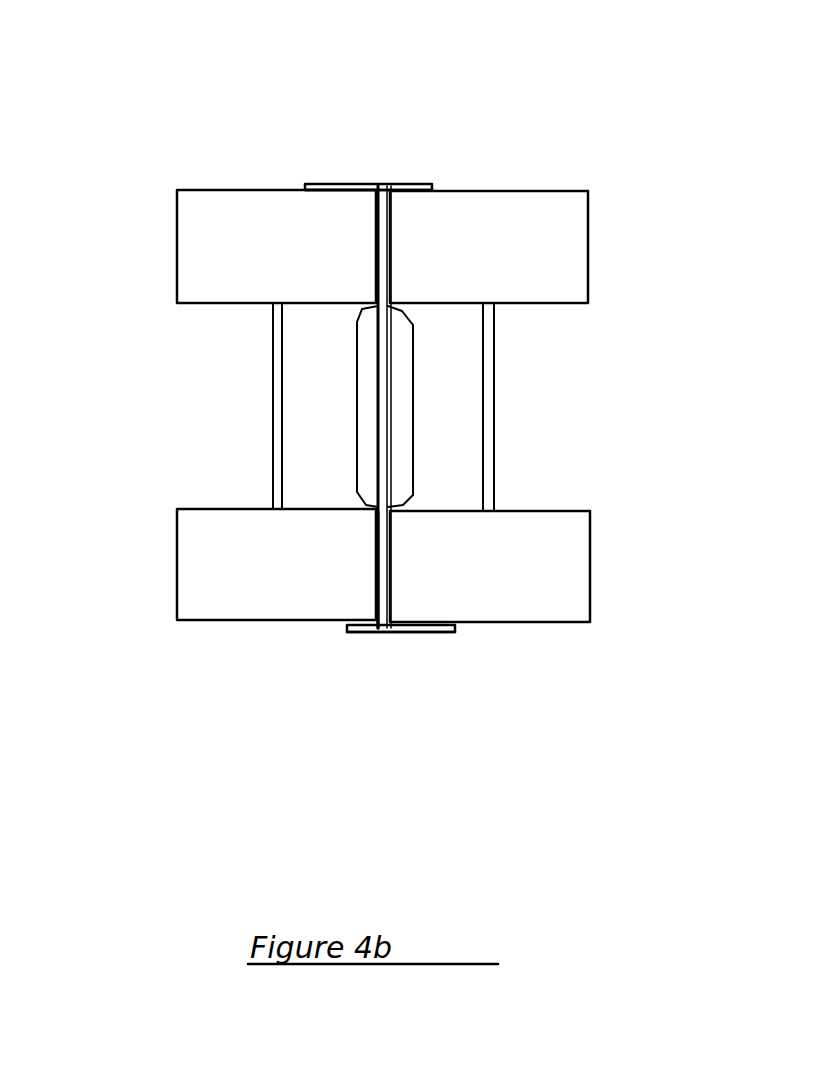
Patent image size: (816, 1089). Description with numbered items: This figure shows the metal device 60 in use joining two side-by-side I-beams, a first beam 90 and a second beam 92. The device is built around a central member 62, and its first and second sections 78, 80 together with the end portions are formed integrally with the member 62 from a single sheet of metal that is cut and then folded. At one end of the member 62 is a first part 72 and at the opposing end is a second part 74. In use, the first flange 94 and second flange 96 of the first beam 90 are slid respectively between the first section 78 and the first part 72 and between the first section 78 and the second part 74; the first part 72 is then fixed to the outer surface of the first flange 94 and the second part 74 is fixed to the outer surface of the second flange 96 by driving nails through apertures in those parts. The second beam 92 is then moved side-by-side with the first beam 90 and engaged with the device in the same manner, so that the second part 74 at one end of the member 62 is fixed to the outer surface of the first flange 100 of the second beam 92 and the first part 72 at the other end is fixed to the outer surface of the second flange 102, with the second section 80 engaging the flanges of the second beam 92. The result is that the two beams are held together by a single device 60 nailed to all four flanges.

The device 60 is at (388, 178).
The member 62 is at (378, 570).
The first part 72 is at (308, 183).
The second part 74 is at (425, 183).
The first section 78 is at (360, 440).
The second section 80 is at (397, 430).
The first beam 90 is at (248, 152).
The second beam 92 is at (560, 148).
The first flange 94 is at (302, 265).
The second flange 96 is at (290, 594).
The first flange 100 is at (522, 266).
The second flange 102 is at (536, 594).